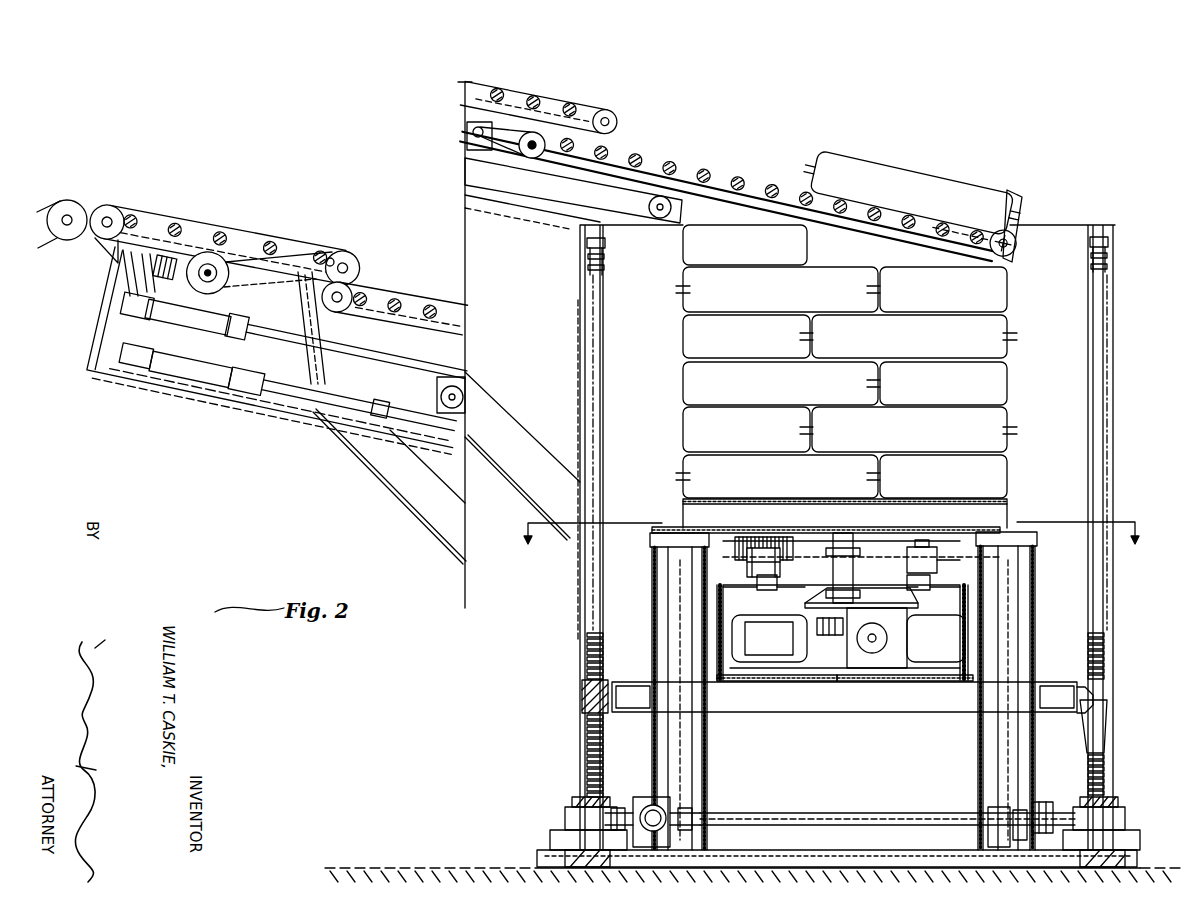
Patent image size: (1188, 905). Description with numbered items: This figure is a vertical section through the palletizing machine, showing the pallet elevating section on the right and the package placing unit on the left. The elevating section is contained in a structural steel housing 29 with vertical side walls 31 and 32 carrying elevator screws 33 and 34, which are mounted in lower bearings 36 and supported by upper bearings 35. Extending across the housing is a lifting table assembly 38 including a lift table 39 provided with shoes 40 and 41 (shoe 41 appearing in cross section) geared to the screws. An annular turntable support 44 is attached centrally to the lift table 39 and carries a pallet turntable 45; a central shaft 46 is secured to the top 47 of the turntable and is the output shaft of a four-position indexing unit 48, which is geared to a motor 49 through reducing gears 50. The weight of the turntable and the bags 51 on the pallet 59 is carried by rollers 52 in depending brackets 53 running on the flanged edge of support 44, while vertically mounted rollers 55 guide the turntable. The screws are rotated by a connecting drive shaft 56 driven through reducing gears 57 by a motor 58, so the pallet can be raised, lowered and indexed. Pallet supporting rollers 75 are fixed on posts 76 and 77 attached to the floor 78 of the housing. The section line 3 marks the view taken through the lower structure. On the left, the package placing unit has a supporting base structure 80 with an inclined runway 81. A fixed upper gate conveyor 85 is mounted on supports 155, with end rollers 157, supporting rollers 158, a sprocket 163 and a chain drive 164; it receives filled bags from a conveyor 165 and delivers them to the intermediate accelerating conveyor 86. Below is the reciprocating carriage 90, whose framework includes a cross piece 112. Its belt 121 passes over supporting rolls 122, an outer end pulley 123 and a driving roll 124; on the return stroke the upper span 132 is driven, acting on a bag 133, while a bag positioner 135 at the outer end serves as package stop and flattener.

The conveyor 165 is at (90, 190).
The upper gate conveyor 85 is at (168, 210).
The supporting rollers 158 is at (270, 246).
The sprocket 163 is at (332, 258).
The end rollers 157 is at (352, 268).
The supports 155 is at (123, 287).
The chain drive 164 is at (277, 287).
The intermediate accelerating conveyor 86 is at (400, 307).
The inclined runway 81 is at (208, 393).
The supporting base structure 80 is at (387, 470).
The cross piece 112 is at (464, 165).
The driving roll 124 is at (533, 160).
The belt 121 is at (640, 182).
The supporting rolls 122 is at (707, 180).
The upper span 132 is at (776, 186).
The bag 133 is at (912, 192).
The bag positioner 135 is at (1020, 200).
The outer end pulley 123 is at (1008, 258).
The upper bearings 35 is at (607, 258).
The reciprocating conveyor or carriage 90 is at (705, 209).
The bags 51 is at (846, 382).
The pallet 59 is at (760, 482).
The pallet turntable 45 is at (768, 537).
The top 47 is at (867, 532).
The structural steel housing 29 is at (579, 380).
The vertical side wall 31 is at (1114, 388).
The section line 3- 3 is at (828, 519).
The pallet supporting rollers 75 is at (671, 535).
The rollers 52 is at (717, 583).
The four-position indexing unit 48 is at (825, 597).
The central shaft 46 is at (908, 585).
The vertically mounted rollers 55 is at (764, 592).
The depending brackets 53 is at (933, 592).
The motor 49 is at (790, 640).
The reducing gears 50 is at (873, 640).
The annular turntable support 44 is at (775, 676).
The lift table 39 is at (905, 690).
The lifting table assembly 38 is at (875, 716).
The vertical side wall 32 is at (580, 657).
The elevator screw 33 is at (1100, 661).
The shoe 41 is at (607, 720).
The shoe 40 is at (1090, 733).
The elevator screw 34 is at (590, 764).
The post 77 is at (680, 752).
The post 76 is at (990, 776).
The reducing gears 57 is at (642, 800).
The motor 58 is at (673, 813).
The connecting drive shaft 56 is at (816, 814).
The lower bearings 36 is at (570, 803).
The floor 78 is at (840, 853).